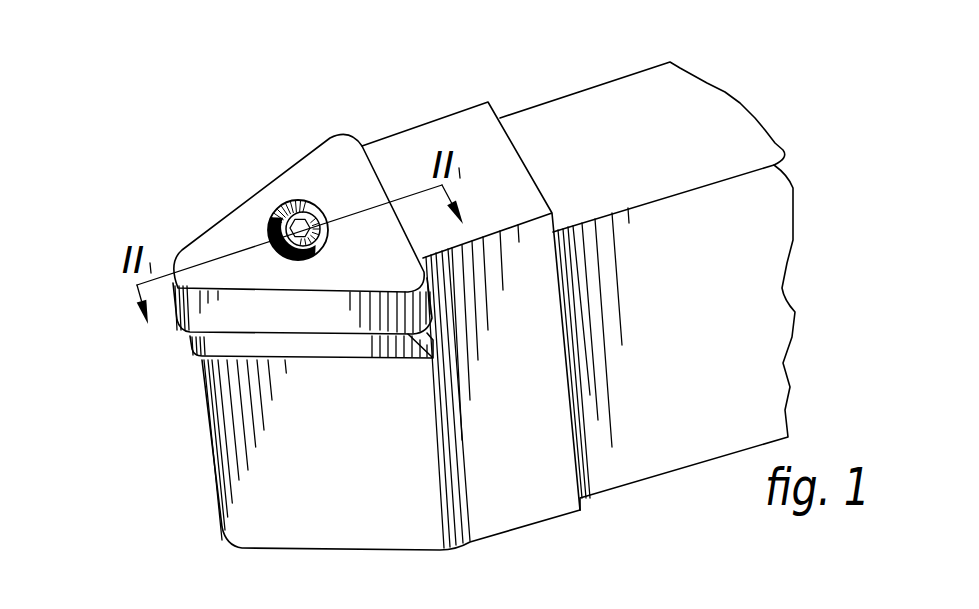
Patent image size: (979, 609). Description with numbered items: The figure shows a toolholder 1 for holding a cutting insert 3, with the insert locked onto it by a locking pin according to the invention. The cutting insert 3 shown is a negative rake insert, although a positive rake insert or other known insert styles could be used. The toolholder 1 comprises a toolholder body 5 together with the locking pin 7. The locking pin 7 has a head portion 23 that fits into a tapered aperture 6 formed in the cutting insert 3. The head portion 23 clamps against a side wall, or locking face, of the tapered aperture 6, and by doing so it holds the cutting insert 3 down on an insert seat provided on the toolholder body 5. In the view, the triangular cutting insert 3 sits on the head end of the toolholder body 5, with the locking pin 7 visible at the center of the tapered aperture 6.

The toolholder 1 is at (814, 318).
The cutting insert 3 is at (321, 163).
The toolholder body 5 is at (518, 468).
The tapered aperture 6 is at (273, 233).
The locking pin 7 is at (302, 213).
The head portion 23 is at (300, 256).